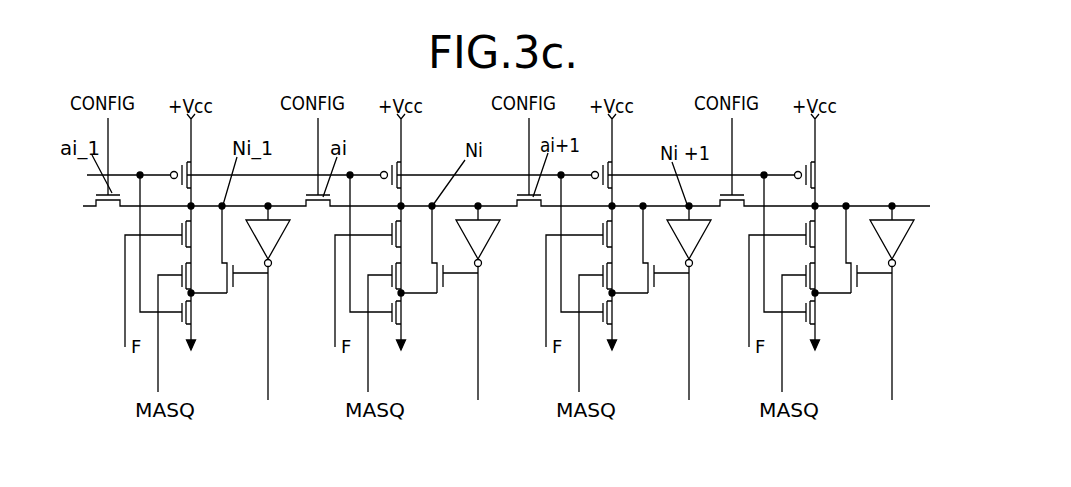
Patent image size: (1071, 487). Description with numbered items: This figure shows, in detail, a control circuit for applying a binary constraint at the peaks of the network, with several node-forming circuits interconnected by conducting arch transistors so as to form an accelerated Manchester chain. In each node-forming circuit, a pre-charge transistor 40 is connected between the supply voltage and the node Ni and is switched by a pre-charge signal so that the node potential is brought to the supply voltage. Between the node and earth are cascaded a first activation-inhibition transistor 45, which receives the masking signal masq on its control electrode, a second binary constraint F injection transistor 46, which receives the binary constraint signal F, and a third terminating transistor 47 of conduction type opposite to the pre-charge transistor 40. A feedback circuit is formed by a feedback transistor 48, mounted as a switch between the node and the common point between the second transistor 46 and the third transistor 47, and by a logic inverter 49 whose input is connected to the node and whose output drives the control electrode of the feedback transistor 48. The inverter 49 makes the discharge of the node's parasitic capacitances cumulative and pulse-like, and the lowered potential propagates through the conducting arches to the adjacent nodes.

The pre-charge transistor 40 is at (393, 168).
The first activation-inhibition transistor 45 is at (392, 272).
The second binary constraint F injection transistor 46 is at (392, 230).
The third terminating transistor 47 is at (396, 317).
The feedback transistor 48 is at (445, 287).
The logic inverter 49 is at (487, 233).